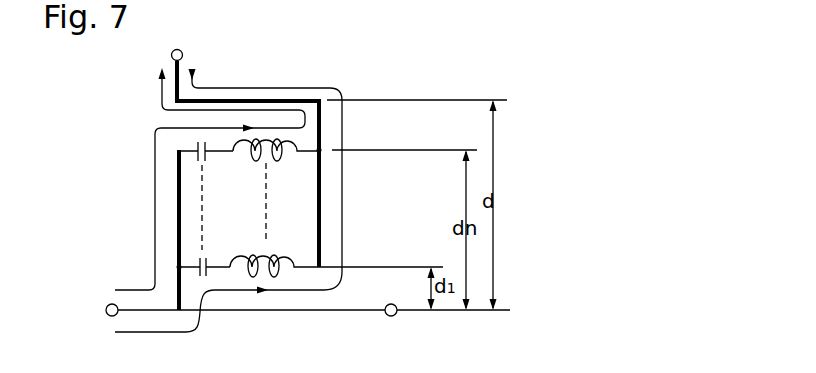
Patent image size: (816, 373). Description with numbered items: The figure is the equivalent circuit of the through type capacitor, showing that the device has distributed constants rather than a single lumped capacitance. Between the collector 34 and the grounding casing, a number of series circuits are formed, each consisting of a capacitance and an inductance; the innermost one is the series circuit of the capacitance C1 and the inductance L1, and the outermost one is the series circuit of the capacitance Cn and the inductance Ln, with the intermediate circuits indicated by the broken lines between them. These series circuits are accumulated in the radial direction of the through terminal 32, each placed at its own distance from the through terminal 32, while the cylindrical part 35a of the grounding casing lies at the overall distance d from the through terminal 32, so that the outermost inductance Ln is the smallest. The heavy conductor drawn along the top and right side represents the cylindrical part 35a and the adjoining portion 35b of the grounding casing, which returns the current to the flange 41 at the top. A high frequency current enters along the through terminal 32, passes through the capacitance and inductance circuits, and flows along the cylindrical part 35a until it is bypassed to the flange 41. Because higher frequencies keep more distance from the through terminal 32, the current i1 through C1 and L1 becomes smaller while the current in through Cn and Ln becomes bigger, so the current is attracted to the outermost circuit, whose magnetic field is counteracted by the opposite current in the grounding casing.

The flange 41 is at (183, 50).
The cylindrical part of the grounding casing 35a is at (262, 100).
The vertical conductor portion 35b is at (322, 177).
The collector 34 is at (179, 228).
The through terminal 32 is at (275, 312).
The capacitance Cn is at (206, 164).
The inductance Ln is at (283, 156).
The capacitance C1 is at (208, 256).
The inductance L1 is at (283, 256).
The current in is at (155, 192).
The current i1 is at (342, 218).